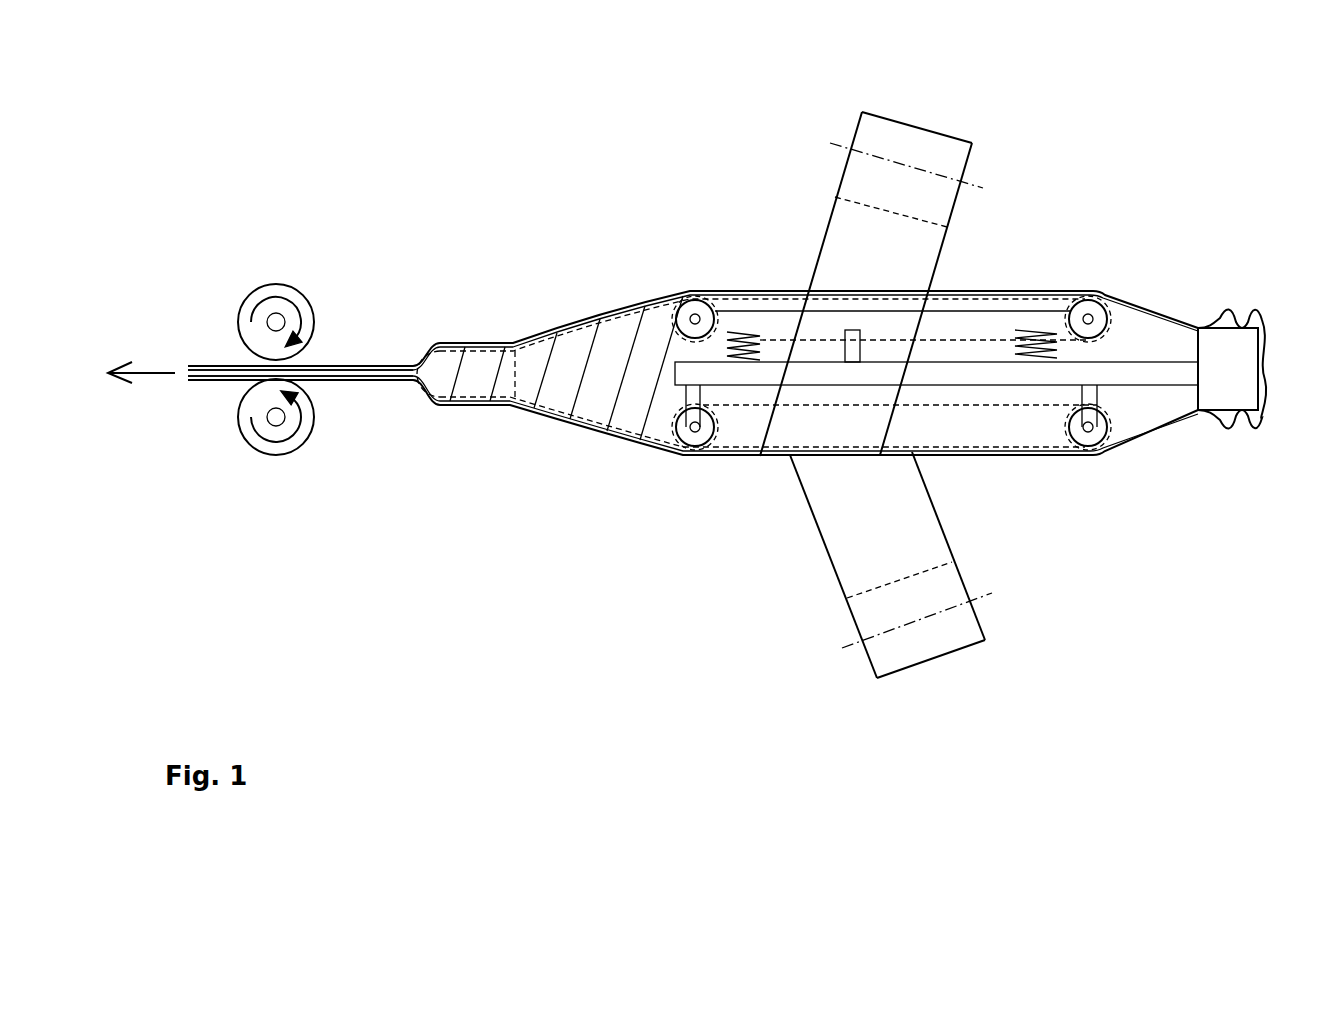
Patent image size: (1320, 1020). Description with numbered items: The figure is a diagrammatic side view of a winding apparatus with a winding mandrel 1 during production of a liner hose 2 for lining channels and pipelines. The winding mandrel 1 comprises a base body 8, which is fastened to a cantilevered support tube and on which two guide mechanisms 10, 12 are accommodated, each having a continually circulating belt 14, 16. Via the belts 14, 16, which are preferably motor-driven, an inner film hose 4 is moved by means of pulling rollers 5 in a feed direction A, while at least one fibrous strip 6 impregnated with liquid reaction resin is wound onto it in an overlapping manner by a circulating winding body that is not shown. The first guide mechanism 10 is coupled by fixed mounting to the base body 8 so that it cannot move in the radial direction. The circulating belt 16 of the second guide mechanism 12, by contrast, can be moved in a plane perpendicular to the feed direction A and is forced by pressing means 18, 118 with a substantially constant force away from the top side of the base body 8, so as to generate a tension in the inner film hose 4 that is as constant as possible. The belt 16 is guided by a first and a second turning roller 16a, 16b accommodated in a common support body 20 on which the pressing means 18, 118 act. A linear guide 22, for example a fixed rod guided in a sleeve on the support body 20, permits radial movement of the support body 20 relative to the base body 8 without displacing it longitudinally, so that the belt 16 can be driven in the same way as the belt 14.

The winding mandrel 1 is at (593, 207).
The liner hose 2 is at (220, 383).
The inner film hose 4 is at (1253, 327).
The pulling rollers 5 is at (313, 400).
The fibrous strip 6 is at (577, 348).
The base body 8 is at (1133, 370).
The first guide mechanism 10 is at (1023, 463).
The second guide mechanism 12 is at (967, 285).
The belt 14 is at (1040, 405).
The belt 16 is at (992, 340).
The first turning roller 16a is at (1097, 313).
The second turning roller 16b is at (687, 297).
The pressing means 18 is at (740, 345).
The pressing means 118 is at (1043, 340).
The support body 20 is at (783, 317).
The linear guide 22 is at (848, 330).
The feed direction A is at (153, 370).